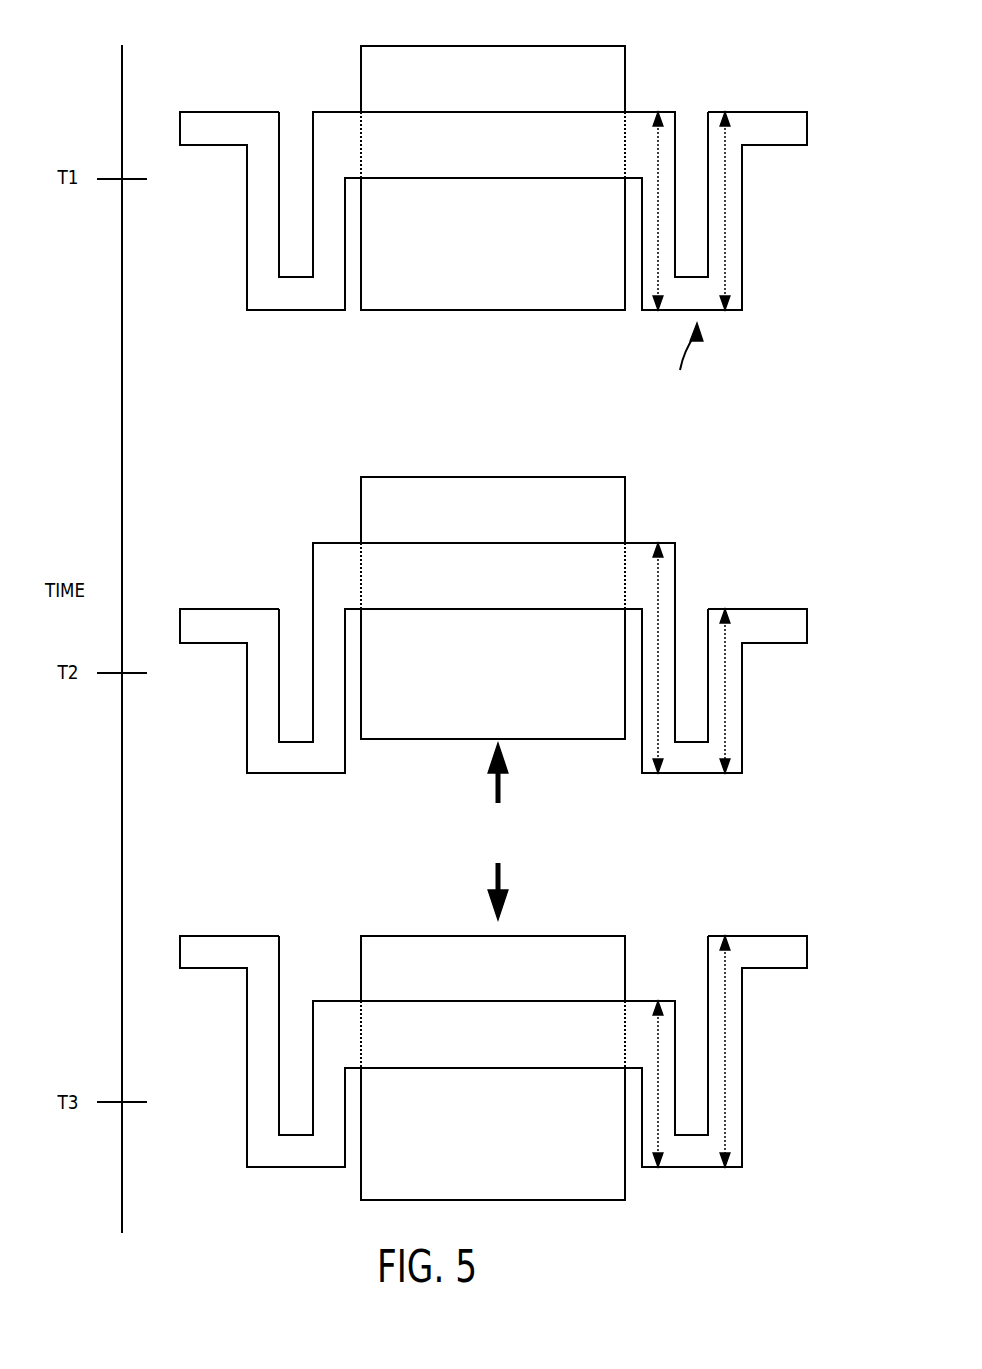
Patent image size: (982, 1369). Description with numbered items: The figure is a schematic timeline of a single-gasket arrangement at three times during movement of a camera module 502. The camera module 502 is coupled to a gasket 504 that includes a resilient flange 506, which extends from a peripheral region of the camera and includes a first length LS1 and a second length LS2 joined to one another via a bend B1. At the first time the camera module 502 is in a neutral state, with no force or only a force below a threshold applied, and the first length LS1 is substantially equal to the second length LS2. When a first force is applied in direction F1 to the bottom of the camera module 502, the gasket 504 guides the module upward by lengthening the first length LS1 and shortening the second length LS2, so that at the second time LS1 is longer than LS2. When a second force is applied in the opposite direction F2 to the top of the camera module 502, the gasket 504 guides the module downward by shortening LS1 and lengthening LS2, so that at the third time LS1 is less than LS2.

The camera module 502 is at (480, 92).
The gasket 504 is at (345, 132).
The resilient flange 506 is at (263, 245).
The first length LS1 is at (658, 270).
The second length LS2 is at (723, 178).
The bend B1 is at (682, 361).
The direction of first force F1 is at (485, 773).
The direction of second force F2 is at (485, 891).